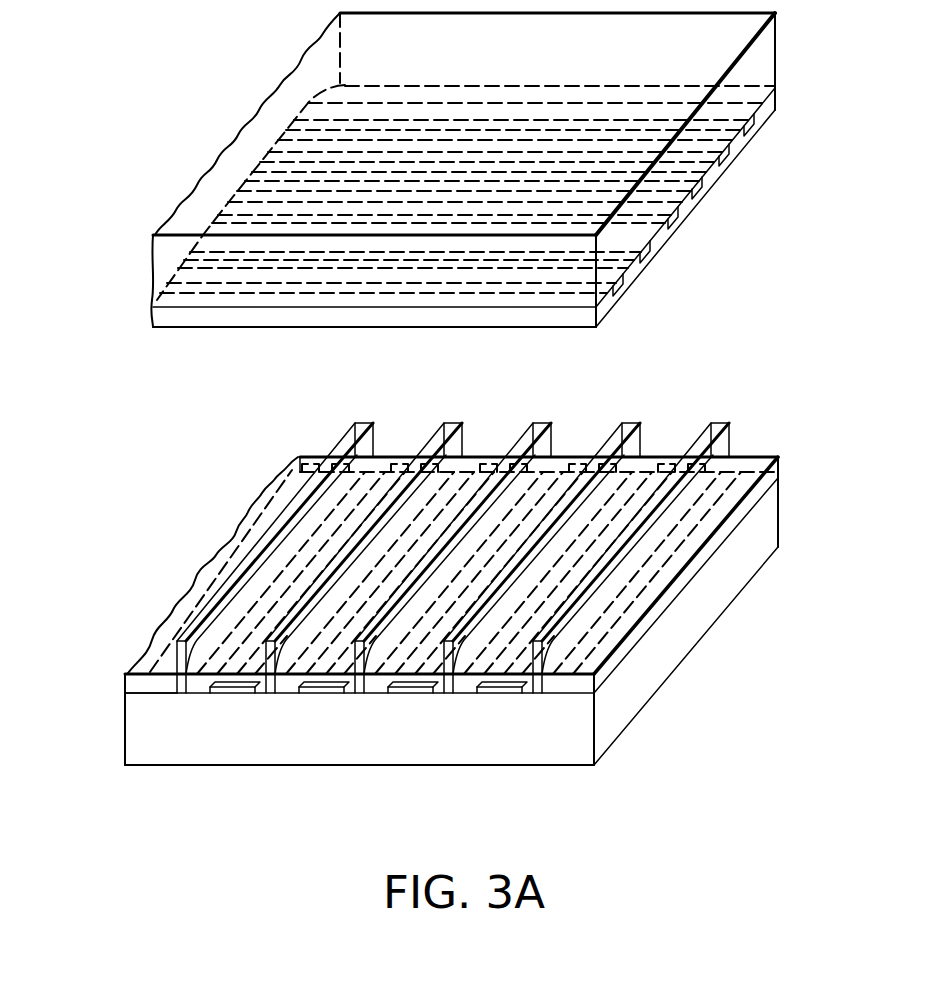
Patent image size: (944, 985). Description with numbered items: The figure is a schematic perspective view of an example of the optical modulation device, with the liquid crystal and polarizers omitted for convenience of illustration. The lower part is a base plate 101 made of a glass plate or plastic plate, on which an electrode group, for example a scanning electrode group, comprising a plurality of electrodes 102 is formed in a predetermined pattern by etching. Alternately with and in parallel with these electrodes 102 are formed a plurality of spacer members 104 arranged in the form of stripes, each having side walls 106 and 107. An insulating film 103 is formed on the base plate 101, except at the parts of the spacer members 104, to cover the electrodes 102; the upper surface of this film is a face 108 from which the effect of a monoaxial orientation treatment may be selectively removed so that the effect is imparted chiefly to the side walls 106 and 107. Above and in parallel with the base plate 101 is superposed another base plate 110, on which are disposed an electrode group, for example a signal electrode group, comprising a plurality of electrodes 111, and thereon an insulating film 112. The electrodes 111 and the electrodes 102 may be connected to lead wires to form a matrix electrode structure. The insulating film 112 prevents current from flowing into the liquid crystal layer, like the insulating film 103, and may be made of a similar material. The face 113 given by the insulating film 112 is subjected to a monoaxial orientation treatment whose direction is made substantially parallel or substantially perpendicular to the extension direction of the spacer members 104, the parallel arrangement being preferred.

The base plate 101 is at (713, 598).
The electrodes 102 is at (238, 690).
The insulating film 103 is at (640, 637).
The spacer members 104 is at (179, 655).
The side wall 106 is at (158, 676).
The side wall 107 is at (197, 655).
The face of the insulating film 108 is at (707, 528).
The base plate 110 is at (823, 51).
The electrodes 111 is at (756, 124).
The insulating film 112 is at (768, 107).
The face 113 is at (583, 323).